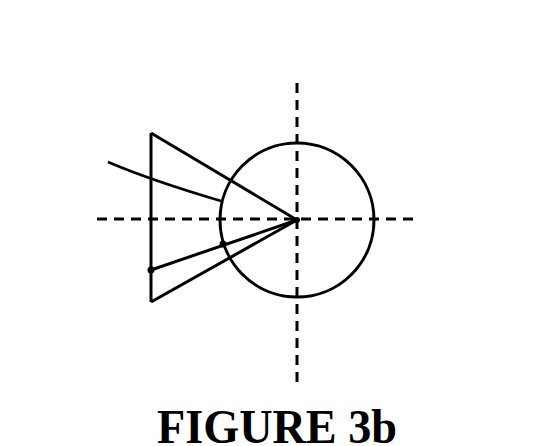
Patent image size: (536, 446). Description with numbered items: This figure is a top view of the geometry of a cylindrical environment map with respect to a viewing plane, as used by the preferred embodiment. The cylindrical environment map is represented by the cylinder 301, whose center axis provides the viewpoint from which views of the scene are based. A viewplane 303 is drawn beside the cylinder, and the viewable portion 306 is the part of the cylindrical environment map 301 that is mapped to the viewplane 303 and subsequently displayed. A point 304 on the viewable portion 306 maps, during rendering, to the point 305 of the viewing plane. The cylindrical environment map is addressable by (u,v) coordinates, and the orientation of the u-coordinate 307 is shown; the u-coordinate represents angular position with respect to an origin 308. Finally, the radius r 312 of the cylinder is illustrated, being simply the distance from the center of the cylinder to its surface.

The cylinder 301 is at (362, 169).
The viewplane 303 is at (152, 177).
The point 304 is at (223, 247).
The point 305 is at (150, 269).
The viewable portion 306 is at (155, 167).
The u-coordinate 307 is at (258, 122).
The origin 308 is at (297, 221).
The radius r 312 is at (270, 202).